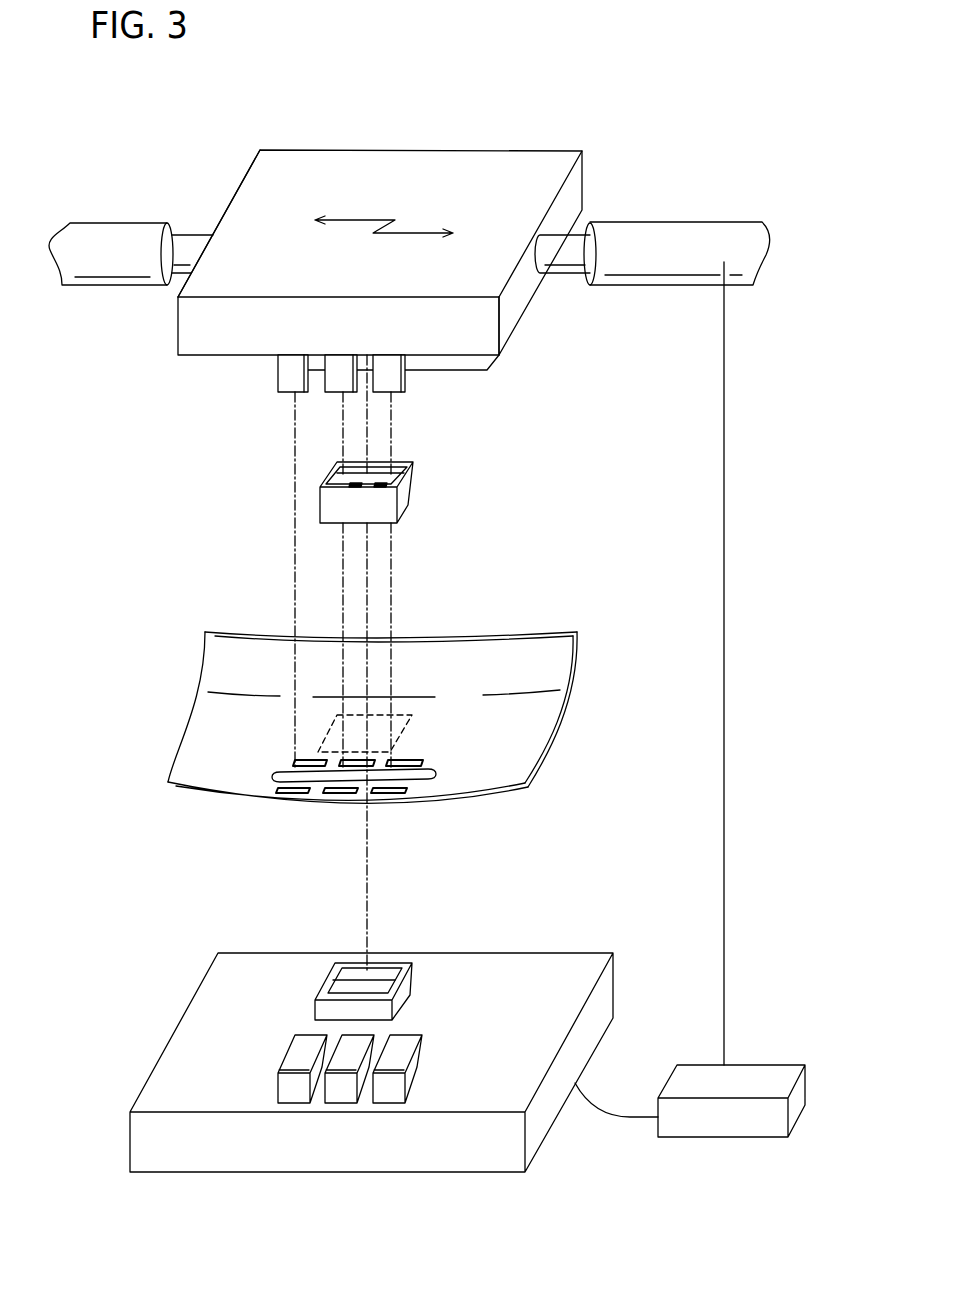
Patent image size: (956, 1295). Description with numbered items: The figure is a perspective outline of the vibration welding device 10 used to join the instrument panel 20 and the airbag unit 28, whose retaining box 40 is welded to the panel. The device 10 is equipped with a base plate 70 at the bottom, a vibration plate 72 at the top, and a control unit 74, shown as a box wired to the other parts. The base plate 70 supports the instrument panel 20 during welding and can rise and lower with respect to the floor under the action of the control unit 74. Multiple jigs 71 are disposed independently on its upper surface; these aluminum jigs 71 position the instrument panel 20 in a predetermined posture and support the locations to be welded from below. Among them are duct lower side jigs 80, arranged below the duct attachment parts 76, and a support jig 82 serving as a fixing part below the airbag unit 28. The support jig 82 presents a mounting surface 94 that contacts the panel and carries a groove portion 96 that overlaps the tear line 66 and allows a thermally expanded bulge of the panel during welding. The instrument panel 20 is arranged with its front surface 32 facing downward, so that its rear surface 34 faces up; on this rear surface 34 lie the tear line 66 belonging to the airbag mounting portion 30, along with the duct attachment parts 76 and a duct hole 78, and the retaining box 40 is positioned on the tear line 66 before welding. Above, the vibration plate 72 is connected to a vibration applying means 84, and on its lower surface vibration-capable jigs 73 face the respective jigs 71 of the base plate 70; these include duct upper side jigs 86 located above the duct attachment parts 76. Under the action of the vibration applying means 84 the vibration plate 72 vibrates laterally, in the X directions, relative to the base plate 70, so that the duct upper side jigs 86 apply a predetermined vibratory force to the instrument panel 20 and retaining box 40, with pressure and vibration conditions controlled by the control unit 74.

The vibration welding device 10 is at (162, 107).
The vibration plate 72 is at (182, 186).
The vibration applying means 84 is at (676, 222).
The duct upper side jigs 86 is at (278, 371).
The jigs of the vibration plate 73 is at (388, 373).
The retaining box 40 is at (414, 476).
The airbag unit 28 is at (366, 492).
The instrument panel 20 is at (155, 697).
The rear surface 34 is at (217, 660).
The front surface 32 is at (203, 796).
The tear line 66 is at (402, 697).
The airbag mounting portion 30 is at (375, 735).
The duct hole 78 is at (433, 768).
The duct attachment parts 76 is at (392, 795).
The base plate 70 is at (150, 1005).
The jigs 71 is at (398, 1007).
The support jig 82 is at (400, 990).
The mounting surface 94 is at (350, 977).
The groove portion 96 is at (382, 967).
The duct lower side jigs 80 is at (413, 1070).
The control unit 74 is at (728, 1125).